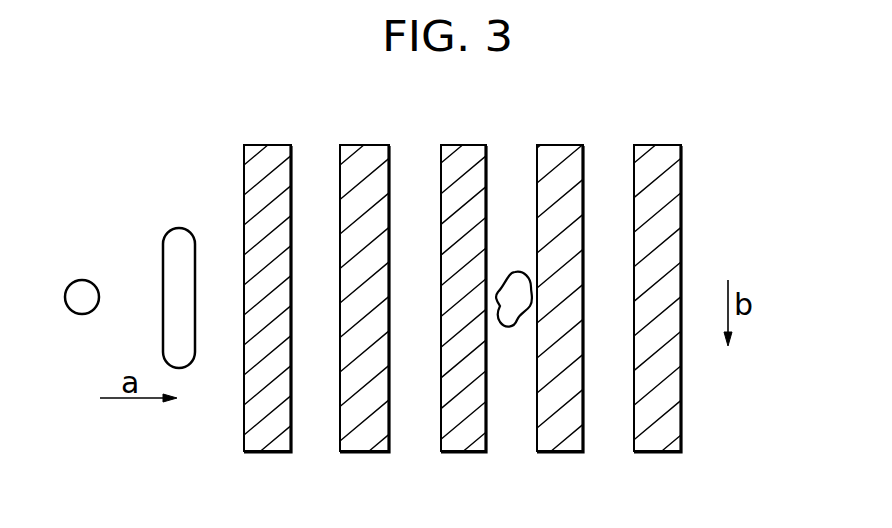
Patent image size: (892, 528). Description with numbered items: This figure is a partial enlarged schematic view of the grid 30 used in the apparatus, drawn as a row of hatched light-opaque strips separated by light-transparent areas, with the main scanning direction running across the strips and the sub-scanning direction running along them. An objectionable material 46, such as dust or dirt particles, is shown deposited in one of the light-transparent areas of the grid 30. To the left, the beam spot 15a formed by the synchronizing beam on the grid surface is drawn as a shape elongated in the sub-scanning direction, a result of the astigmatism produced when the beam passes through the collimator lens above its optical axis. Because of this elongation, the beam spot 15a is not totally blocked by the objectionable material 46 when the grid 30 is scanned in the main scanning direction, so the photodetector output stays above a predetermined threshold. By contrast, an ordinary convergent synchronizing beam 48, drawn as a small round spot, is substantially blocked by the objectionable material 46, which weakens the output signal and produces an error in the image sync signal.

The grid 30 is at (713, 176).
The objectionable material 46 is at (515, 272).
The beam spot 15a is at (180, 237).
The ordinary convergent synchronizing beam 48 is at (82, 290).